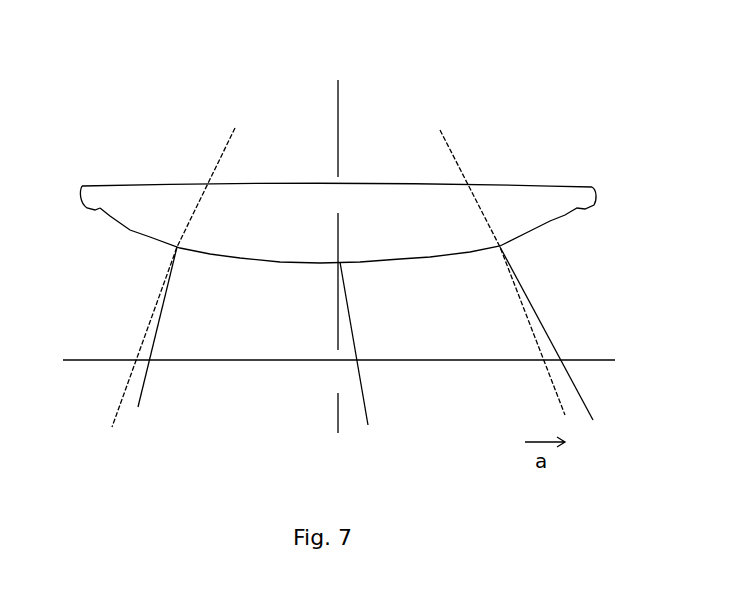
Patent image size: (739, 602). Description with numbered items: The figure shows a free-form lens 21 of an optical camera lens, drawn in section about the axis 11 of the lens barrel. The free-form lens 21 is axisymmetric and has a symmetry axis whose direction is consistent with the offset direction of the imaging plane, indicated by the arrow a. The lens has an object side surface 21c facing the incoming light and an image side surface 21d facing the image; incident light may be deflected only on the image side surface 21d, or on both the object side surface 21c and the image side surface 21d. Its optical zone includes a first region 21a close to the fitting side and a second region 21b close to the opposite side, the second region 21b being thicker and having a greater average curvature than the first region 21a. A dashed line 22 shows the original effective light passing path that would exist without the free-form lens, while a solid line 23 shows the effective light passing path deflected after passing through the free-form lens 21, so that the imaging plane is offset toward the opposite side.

The axis 11 is at (337, 118).
The free-form lens 21 is at (321, 222).
The first region 21a is at (163, 204).
The second region 21b is at (463, 206).
The object side surface 21c is at (365, 183).
The image side surface 21d is at (395, 260).
The dashed line 22 is at (112, 427).
The solid line 23 is at (593, 420).